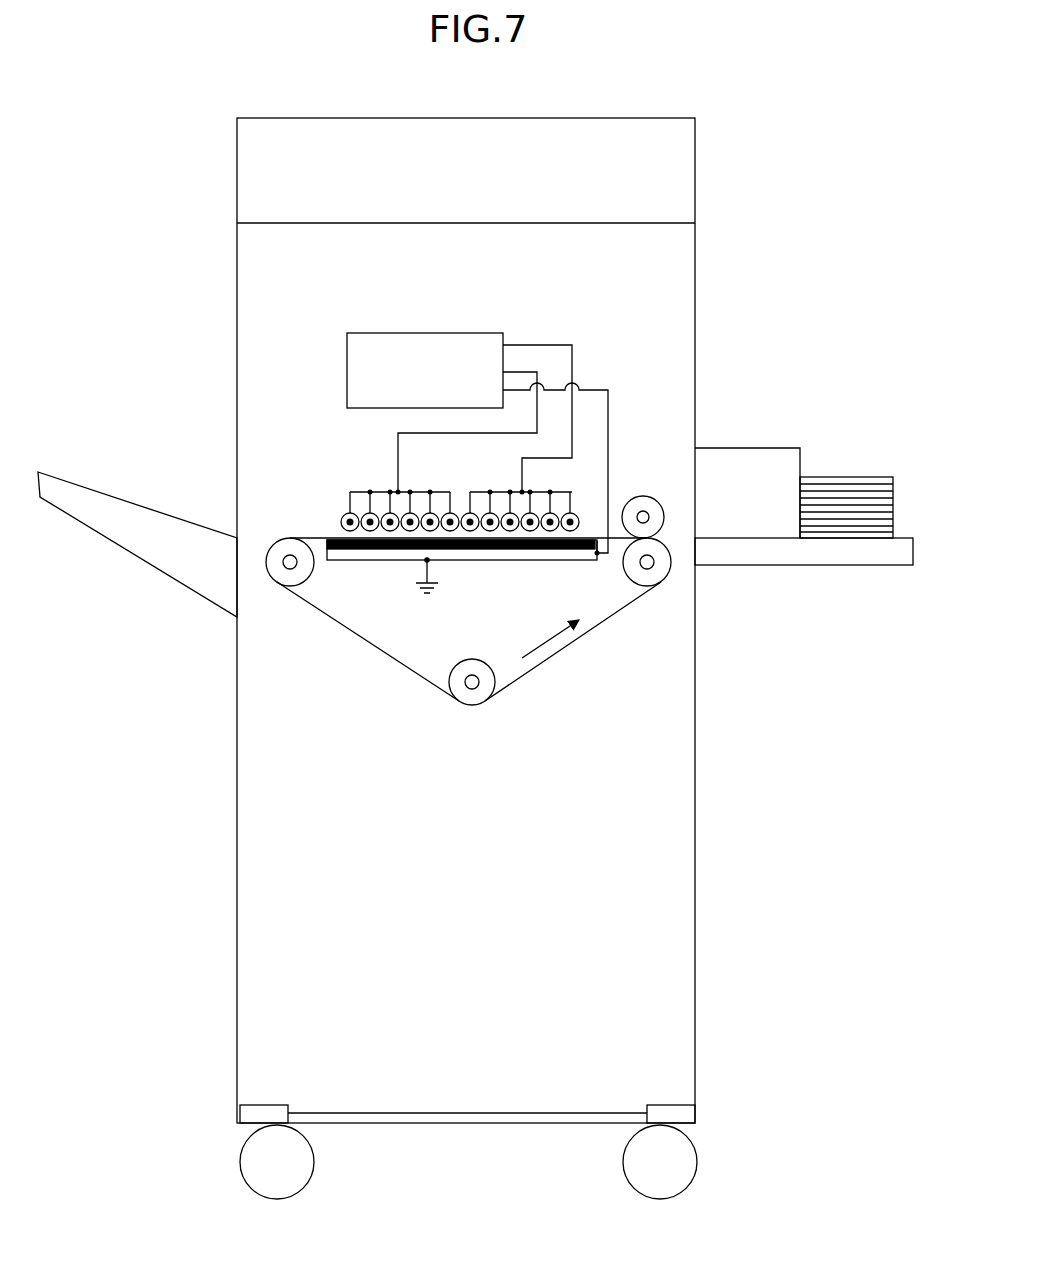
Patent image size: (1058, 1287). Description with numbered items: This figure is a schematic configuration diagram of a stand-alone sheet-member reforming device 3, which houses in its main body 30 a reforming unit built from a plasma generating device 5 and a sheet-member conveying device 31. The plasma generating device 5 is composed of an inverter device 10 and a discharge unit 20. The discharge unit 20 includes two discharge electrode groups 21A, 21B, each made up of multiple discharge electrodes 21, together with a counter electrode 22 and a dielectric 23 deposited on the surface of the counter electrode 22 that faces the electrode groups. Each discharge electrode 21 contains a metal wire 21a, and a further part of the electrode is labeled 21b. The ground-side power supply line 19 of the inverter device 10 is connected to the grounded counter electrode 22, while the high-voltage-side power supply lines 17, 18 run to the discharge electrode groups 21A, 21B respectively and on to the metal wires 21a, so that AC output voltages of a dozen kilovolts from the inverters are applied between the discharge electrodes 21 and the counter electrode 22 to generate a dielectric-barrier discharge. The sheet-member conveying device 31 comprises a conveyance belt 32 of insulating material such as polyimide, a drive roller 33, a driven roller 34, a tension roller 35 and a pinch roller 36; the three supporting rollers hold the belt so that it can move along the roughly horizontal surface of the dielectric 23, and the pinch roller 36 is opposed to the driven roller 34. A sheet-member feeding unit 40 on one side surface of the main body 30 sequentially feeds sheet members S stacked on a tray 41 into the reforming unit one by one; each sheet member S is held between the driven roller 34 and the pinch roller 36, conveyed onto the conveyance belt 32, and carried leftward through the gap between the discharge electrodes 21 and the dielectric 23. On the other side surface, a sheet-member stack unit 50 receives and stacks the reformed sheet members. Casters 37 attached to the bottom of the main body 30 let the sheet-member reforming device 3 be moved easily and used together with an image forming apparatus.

The sheet-member reforming device 3 is at (741, 101).
The plasma generating device 5 is at (281, 383).
The inverter device 10 is at (430, 333).
The high-voltage-side power supply line 17 is at (573, 354).
The high-voltage-side power supply line 18 is at (538, 378).
The ground-side power supply line 19 is at (608, 405).
The discharge unit 20 is at (438, 606).
The discharge electrodes 21 is at (431, 480).
The discharge electrode group 21A is at (500, 482).
The discharge electrode group 21B is at (356, 480).
The metal wire 21a is at (467, 549).
The electrode portion 21b is at (497, 549).
The counter electrode 22 is at (385, 556).
The dielectric 23 is at (553, 548).
The main body 30 is at (695, 345).
The sheet-member conveying device 31 is at (469, 625).
The conveyance belt 32 is at (543, 663).
The drive roller 33 is at (293, 548).
The driven roller 34 is at (663, 590).
The tension roller 35 is at (472, 706).
The pinch roller 36 is at (643, 496).
The casters 37 is at (253, 1158).
The sheet-member feeding unit 40 is at (833, 418).
The tray 41 is at (795, 566).
The sheet-member stack unit 50 is at (114, 478).
The sheet member S is at (850, 477).